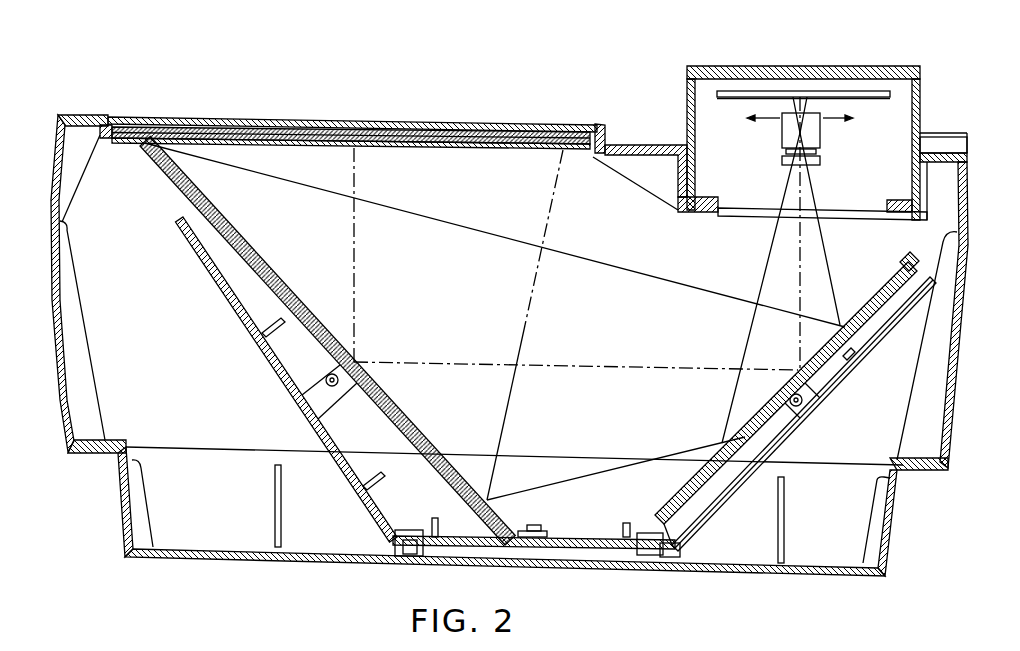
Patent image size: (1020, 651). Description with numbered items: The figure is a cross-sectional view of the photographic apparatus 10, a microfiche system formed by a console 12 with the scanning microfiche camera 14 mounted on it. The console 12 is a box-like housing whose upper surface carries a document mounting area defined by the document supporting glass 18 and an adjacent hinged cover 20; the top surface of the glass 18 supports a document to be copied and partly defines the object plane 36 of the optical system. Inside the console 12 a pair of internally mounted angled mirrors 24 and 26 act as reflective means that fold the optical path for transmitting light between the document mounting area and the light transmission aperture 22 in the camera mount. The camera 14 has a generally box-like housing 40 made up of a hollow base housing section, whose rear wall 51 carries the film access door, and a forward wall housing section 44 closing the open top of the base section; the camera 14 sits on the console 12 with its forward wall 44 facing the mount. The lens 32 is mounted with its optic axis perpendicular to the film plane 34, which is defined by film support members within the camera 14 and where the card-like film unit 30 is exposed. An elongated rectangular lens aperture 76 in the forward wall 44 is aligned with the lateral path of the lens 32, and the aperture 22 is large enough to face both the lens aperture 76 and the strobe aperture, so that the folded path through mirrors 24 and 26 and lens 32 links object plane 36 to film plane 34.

The photographic apparatus 10 is at (370, 112).
The console 12 is at (600, 117).
The scanning microfiche camera 14 is at (924, 58).
The document supporting glass 18 is at (530, 139).
The hinged cover 20 is at (481, 122).
The light transmission aperture 22 is at (750, 212).
The angled mirror 24 is at (873, 298).
The angled mirror 26 is at (271, 268).
The film unit 30 is at (835, 85).
The lens 32 is at (820, 132).
The film plane 34 is at (860, 100).
The object plane 36 is at (447, 137).
The camera housing 40 is at (685, 60).
The forward wall housing section 44 is at (707, 210).
The rear wall 51 is at (770, 67).
The lens aperture 76 is at (731, 200).